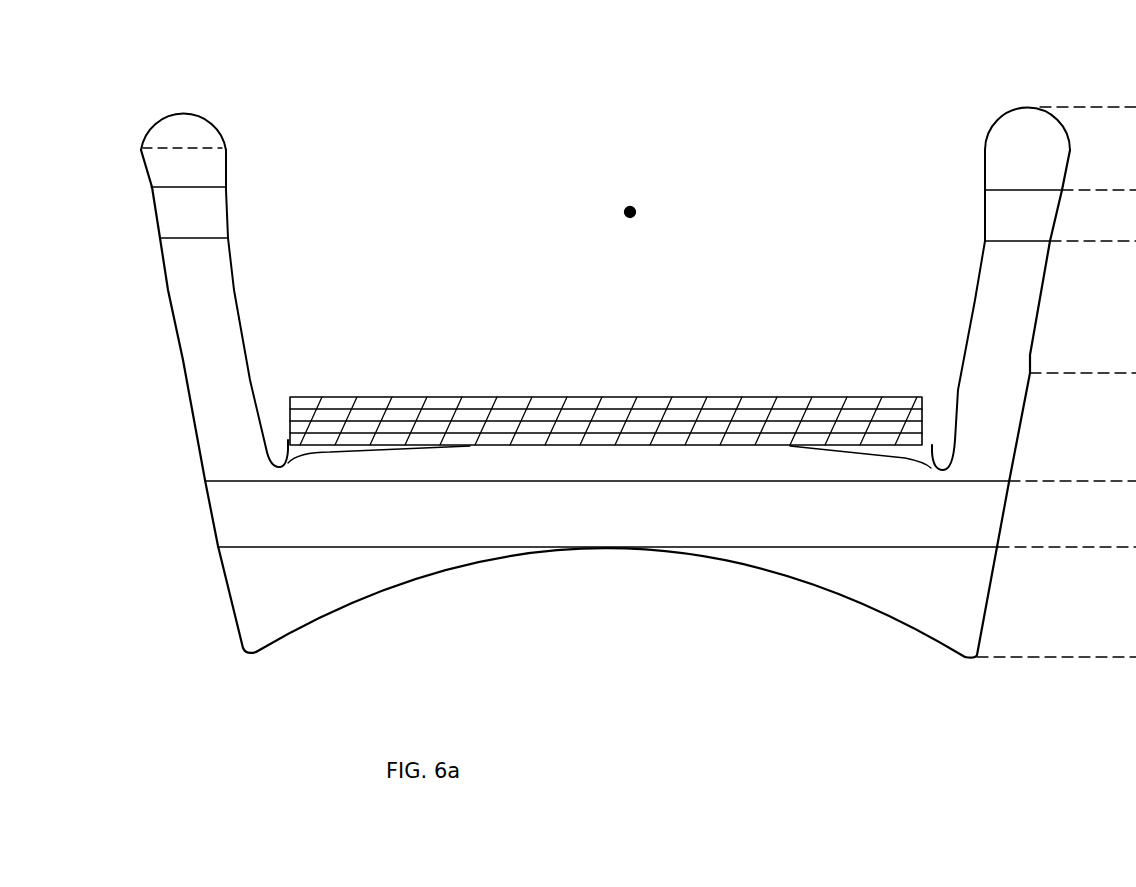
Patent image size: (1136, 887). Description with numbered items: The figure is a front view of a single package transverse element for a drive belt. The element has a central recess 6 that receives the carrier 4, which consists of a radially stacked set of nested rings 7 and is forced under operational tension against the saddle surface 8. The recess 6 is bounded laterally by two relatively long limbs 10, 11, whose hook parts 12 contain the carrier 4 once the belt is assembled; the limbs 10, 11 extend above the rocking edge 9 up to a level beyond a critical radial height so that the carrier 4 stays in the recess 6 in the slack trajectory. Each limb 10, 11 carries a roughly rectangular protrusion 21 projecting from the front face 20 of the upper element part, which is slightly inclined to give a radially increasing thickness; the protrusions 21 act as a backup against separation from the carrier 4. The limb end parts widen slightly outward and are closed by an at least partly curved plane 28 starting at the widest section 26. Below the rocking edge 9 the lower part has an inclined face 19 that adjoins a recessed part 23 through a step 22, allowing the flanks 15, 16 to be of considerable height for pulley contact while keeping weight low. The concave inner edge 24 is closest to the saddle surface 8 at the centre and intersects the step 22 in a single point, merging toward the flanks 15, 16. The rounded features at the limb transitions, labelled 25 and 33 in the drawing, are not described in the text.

The carrier 4 is at (640, 368).
The central recess 6 is at (629, 205).
The set of nested rings 7 is at (845, 396).
The saddle surface 8 is at (790, 450).
The rocking edge 9 is at (888, 484).
The limb 10 is at (150, 360).
The limb 11 is at (1065, 352).
The hook part 12 is at (206, 481).
The flank 15 is at (214, 533).
The flank 16 is at (1005, 537).
The inclined face 19 is at (362, 528).
The front face 20 is at (432, 462).
The protrusion 21 is at (210, 222).
The step 22 is at (950, 553).
The recessed part 23 is at (296, 585).
The inner edge 24 is at (540, 551).
The arm transition line 25 is at (188, 242).
The widest section 26 is at (202, 150).
The curved plane 28 is at (187, 105).
The groove 33 is at (287, 432).